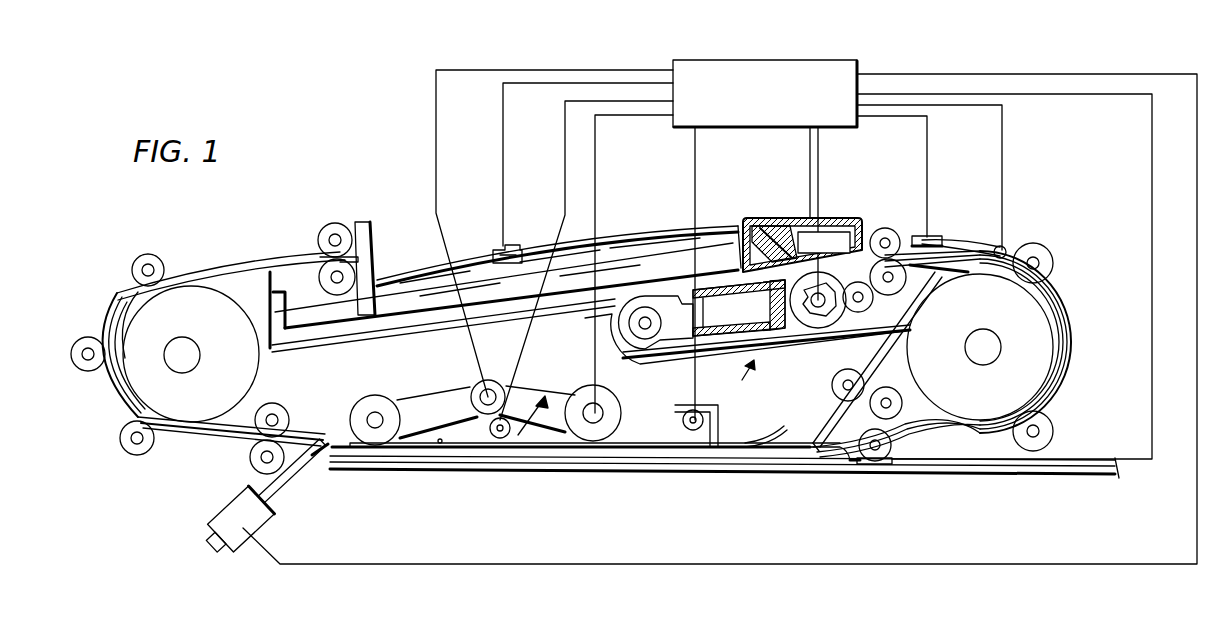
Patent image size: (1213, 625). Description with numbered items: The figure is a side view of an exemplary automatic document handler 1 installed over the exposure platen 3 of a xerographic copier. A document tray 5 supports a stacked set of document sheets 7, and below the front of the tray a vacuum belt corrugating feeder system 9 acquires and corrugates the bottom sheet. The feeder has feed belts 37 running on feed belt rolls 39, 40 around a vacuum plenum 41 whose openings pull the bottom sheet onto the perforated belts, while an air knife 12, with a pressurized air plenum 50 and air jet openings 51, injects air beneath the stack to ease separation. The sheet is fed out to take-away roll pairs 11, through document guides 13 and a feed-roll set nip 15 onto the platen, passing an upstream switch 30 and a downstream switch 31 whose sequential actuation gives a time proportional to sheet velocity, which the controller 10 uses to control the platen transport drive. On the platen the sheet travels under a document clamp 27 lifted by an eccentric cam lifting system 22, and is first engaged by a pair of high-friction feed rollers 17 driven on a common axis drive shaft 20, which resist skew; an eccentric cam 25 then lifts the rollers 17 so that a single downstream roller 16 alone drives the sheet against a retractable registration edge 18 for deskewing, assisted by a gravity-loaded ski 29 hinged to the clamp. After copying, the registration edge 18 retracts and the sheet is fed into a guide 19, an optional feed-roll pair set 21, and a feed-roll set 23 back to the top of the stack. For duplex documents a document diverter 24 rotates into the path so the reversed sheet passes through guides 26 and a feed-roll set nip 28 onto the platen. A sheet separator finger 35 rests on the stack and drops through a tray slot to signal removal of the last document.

The automatic document handler 1 is at (531, 226).
The exposure platen 3 is at (445, 462).
The document tray 5 is at (442, 317).
The document sheets 7 is at (708, 243).
The vacuum belt corrugating feeder system 9 is at (726, 392).
The controller 10 is at (797, 58).
The take-away roll pairs 11 is at (895, 262).
The air knife 12 is at (765, 225).
The document guides 13 is at (1010, 255).
The feed-roll set nip 15 is at (892, 433).
The single downstream roller 16 is at (365, 412).
The pair of feed rollers 17 is at (600, 400).
The retractable registration edge 18 is at (312, 466).
The guide 19 is at (212, 445).
The common axis drive shaft 20 is at (490, 382).
The feed-roll pair set 21 is at (268, 440).
The eccentric cam lifting system 22 is at (683, 420).
The feed-roll set 23 is at (322, 240).
The document diverter 24 is at (998, 245).
The eccentric cam 25 is at (497, 440).
The guides 26 is at (893, 362).
The document clamp 27 is at (742, 440).
The feed-roll set nip 28 is at (840, 400).
The ski 29 is at (400, 450).
The upstream switch 30 is at (935, 235).
The downstream switch 31 is at (882, 466).
The sheet separator finger 35 is at (500, 252).
The feed belts 37 is at (673, 347).
The feed belt roll 39 is at (630, 325).
The feed belt roll 40 is at (830, 323).
The vacuum plenum 41 is at (752, 322).
The pressurized air plenum 50 is at (835, 235).
The air jet openings 51 is at (737, 242).